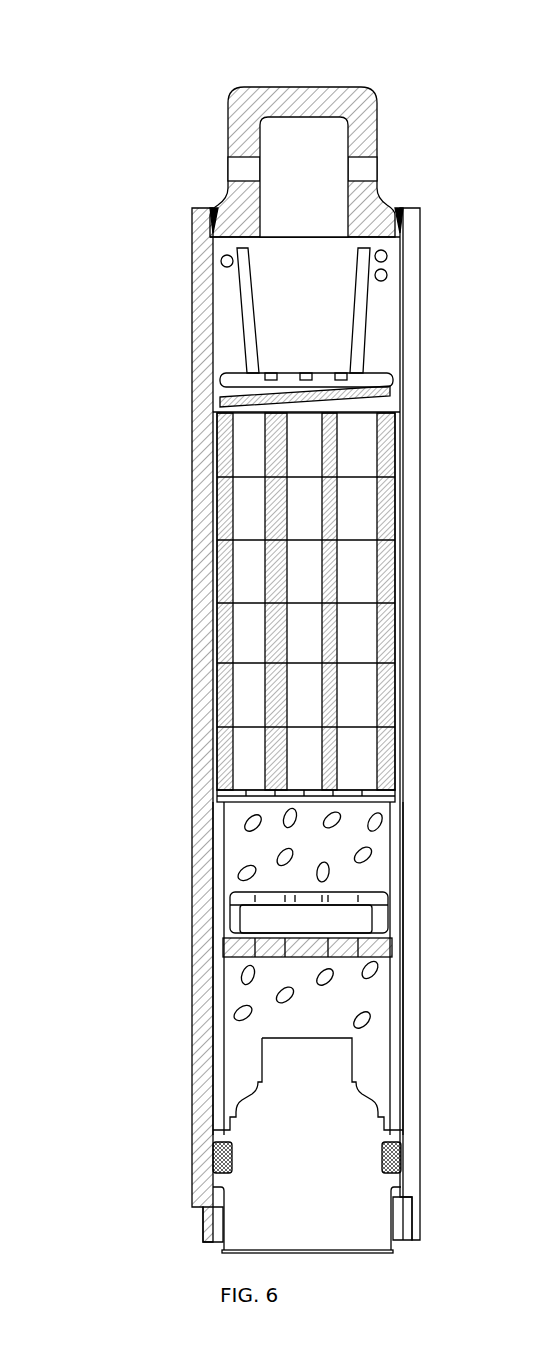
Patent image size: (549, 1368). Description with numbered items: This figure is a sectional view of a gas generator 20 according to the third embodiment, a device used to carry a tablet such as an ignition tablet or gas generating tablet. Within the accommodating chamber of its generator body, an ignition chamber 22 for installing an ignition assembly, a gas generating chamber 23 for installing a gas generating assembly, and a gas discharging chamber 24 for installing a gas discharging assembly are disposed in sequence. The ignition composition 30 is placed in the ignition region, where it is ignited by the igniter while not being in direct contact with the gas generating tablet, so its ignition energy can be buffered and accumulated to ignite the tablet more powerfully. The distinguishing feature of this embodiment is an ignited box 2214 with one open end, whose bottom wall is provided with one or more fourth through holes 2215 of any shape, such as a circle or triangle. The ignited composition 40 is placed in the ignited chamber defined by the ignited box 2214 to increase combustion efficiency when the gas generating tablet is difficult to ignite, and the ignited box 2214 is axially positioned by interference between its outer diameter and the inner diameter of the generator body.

The gas generator 20 is at (342, 35).
The ignition chamber 22 is at (257, 1020).
The gas generating chamber 23 is at (418, 233).
The gas discharging chamber 24 is at (415, 87).
The fourth through hole 2215 is at (257, 797).
The ignited box 2214 is at (222, 850).
The ignited composition 40 is at (247, 880).
The ignition composition 30 is at (287, 993).